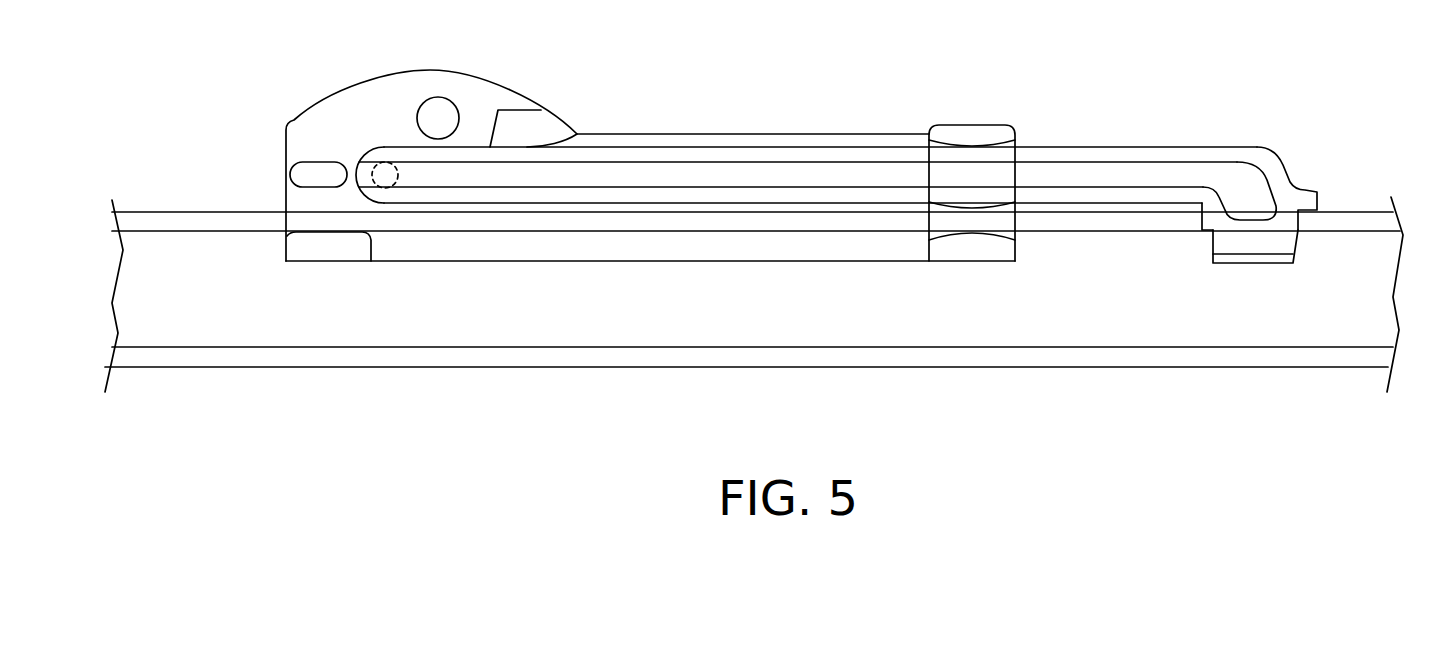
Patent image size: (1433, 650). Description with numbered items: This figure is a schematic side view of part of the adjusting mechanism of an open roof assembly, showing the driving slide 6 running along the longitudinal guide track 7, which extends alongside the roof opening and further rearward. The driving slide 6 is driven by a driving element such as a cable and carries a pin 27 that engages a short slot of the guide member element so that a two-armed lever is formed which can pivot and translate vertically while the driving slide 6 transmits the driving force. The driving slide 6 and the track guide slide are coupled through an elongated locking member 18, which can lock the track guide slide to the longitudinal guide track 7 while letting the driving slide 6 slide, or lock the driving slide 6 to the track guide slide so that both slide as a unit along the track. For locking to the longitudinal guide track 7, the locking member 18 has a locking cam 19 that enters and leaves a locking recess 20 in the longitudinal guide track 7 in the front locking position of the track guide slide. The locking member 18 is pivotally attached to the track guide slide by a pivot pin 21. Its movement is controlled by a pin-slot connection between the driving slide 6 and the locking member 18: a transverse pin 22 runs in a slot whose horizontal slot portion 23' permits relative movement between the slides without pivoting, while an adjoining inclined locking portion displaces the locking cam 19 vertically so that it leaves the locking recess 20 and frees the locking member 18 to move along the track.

The driving slide 6 is at (407, 87).
The longitudinal guide track 7 is at (212, 222).
The locking member 18 is at (703, 157).
The locking cam 19 is at (1208, 226).
The locking recess 20 is at (1303, 213).
The pivot pin 21 is at (389, 178).
The transverse cam or pin 22 is at (330, 173).
The horizontal slot portion 23' is at (945, 160).
The pin 27 is at (447, 123).